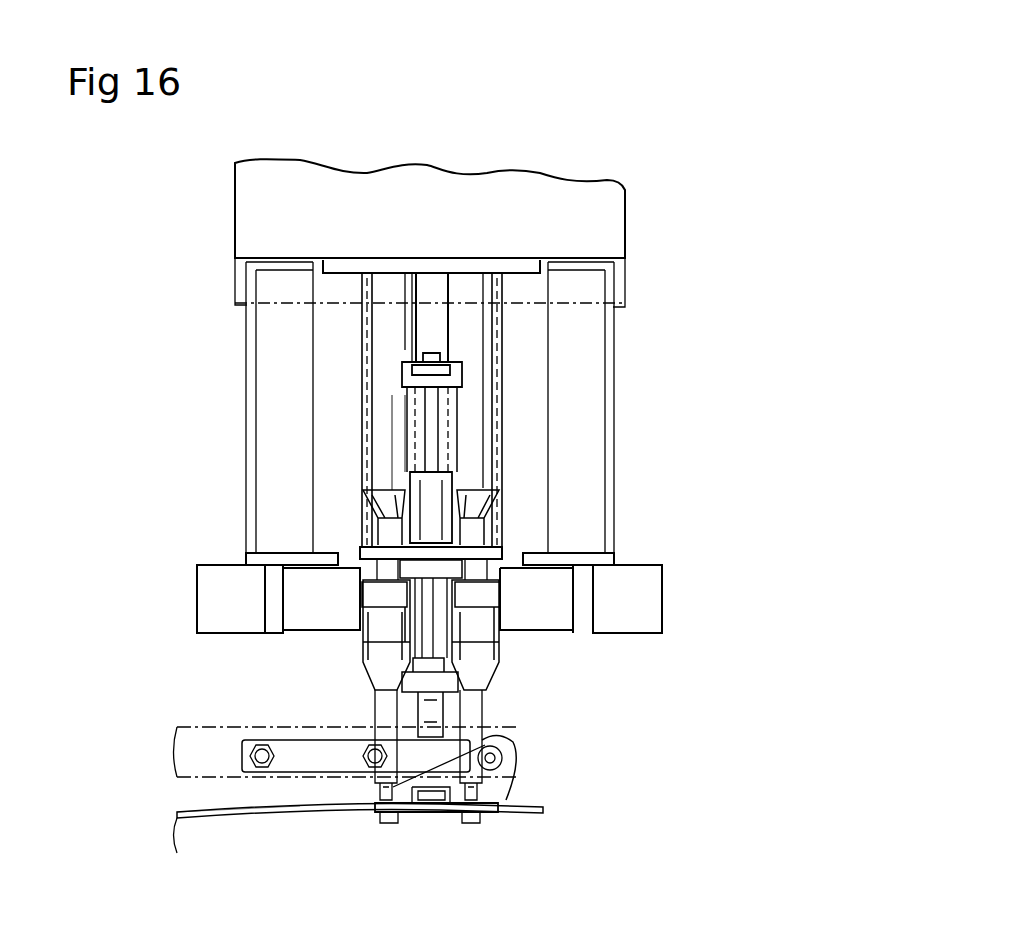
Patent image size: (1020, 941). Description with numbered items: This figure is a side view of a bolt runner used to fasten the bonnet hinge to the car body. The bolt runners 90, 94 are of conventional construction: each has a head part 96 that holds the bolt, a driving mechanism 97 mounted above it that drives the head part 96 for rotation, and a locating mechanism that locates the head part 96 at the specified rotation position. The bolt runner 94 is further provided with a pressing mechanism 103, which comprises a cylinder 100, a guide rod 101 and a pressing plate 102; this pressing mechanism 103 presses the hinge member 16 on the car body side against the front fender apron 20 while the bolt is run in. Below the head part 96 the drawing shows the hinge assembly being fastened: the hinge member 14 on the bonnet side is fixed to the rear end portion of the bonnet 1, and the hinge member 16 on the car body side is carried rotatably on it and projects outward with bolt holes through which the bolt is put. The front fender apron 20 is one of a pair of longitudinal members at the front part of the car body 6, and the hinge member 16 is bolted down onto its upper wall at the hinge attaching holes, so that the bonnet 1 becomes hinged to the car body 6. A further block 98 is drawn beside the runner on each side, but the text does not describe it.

The bonnet 1 is at (205, 723).
The car body 6 is at (543, 803).
The hinge member on the bonnet side 14 is at (300, 765).
The hinge member on the car body side 16 is at (503, 793).
The front fender apron 20 is at (200, 812).
The bolt runner 90 is at (697, 246).
The bolt runner 94 is at (422, 479).
The head part 96 is at (483, 707).
The driving mechanism 97 is at (235, 218).
The guide block 98 is at (607, 640).
The cylinder 100 is at (457, 403).
The guide rod 101 is at (440, 435).
The pressing plate 102 is at (423, 722).
The pressing mechanism 103 is at (459, 358).